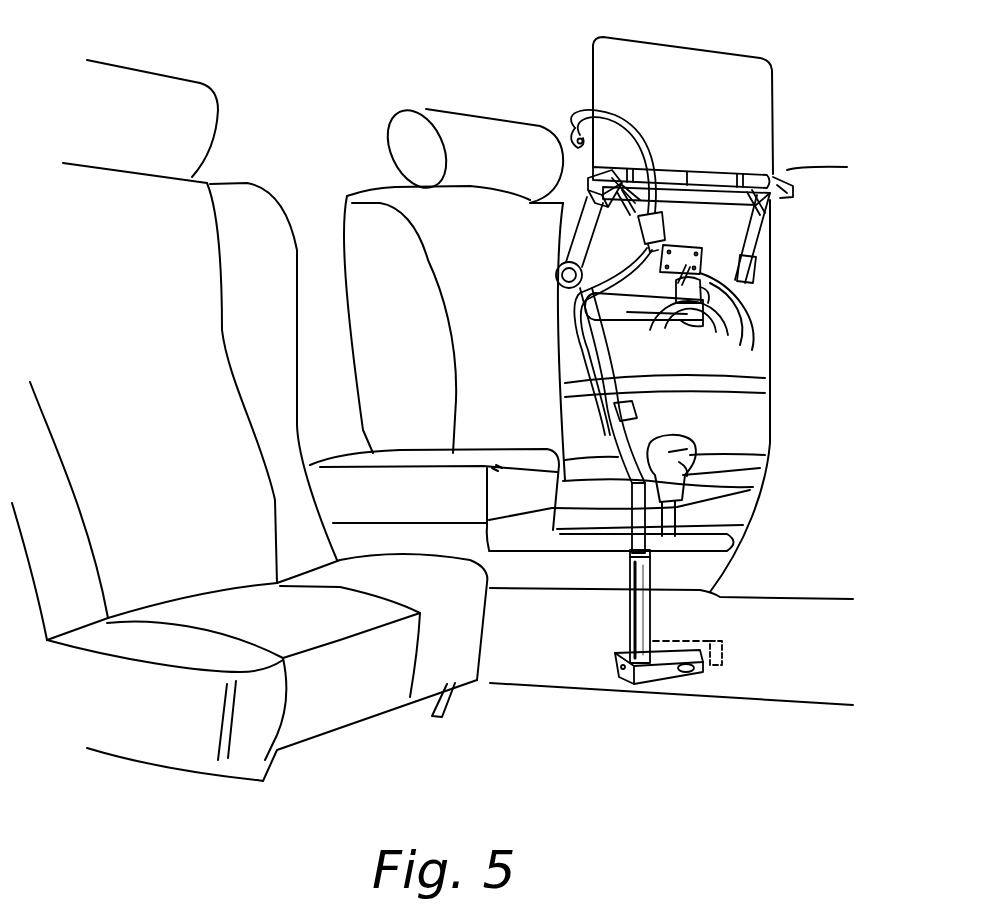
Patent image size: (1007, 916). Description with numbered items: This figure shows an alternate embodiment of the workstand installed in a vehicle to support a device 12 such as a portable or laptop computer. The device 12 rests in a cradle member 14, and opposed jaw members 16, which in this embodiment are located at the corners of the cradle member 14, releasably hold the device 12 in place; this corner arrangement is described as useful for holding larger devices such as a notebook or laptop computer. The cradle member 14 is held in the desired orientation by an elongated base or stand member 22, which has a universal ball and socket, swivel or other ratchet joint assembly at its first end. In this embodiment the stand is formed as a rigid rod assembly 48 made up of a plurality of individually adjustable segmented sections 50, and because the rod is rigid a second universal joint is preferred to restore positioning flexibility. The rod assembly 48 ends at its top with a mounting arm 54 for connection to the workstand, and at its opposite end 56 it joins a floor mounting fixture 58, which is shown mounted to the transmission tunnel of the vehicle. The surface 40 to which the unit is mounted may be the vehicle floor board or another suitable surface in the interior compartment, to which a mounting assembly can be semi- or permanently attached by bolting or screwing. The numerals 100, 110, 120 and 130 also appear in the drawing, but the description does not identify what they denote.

The device 12 is at (786, 122).
The cradle member 14 is at (764, 266).
The opposed jaw members 16 is at (790, 204).
The elongated base or stand member 22 is at (708, 270).
The surface 40 is at (592, 658).
The rigid rod assembly 48 is at (596, 432).
The segmented sections 50 is at (664, 580).
The mounting arm 54 is at (644, 336).
The opposite end 56 is at (662, 609).
The floor mounting fixture 58 is at (692, 683).
The cable 100 is at (566, 316).
The connector 110 is at (630, 232).
The cable loop 120 is at (572, 110).
The ring 130 is at (553, 273).